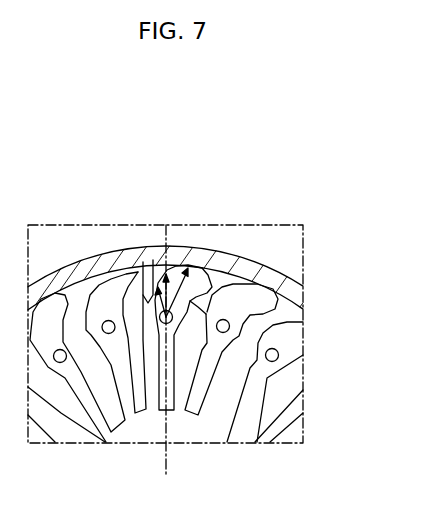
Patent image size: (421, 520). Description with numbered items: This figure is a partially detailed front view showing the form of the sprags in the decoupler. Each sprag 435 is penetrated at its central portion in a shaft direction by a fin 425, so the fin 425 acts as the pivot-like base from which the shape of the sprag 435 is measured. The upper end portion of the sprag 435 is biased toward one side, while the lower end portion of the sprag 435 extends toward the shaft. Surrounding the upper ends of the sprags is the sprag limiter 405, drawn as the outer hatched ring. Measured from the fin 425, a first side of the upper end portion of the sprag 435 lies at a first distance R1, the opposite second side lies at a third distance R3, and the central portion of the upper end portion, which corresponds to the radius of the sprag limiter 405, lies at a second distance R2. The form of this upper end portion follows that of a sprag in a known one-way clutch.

The sprag limiter 405 is at (277, 276).
The fin 425 is at (278, 352).
The sprag 435 is at (108, 290).
The first distance R1 is at (150, 312).
The second distance R2 is at (163, 297).
The third distance R3 is at (203, 265).